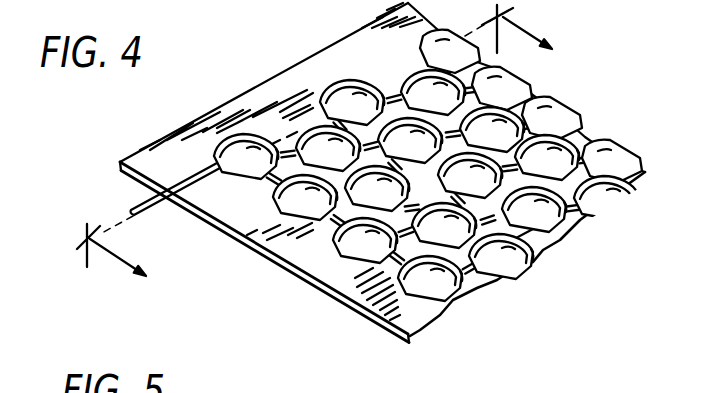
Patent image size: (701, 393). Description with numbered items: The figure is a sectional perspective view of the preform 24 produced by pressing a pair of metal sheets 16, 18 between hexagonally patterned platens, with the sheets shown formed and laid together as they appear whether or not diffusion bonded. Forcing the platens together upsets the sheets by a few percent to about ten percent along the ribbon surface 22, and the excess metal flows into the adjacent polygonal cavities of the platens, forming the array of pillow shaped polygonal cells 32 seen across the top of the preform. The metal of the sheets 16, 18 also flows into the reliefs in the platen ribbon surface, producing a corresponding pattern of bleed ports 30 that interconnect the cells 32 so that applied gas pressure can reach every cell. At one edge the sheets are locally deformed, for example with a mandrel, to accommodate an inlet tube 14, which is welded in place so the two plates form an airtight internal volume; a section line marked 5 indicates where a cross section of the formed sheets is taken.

The inlet tube 14 is at (143, 202).
The metal sheet 16 is at (405, 336).
The metal sheet 18 is at (265, 257).
The ribbon surface 22 is at (541, 243).
The preform 24 is at (327, 39).
The bleed ports 30 is at (330, 218).
The polygonal cells 32 is at (515, 272).
The section line 5- 5 is at (324, 145).